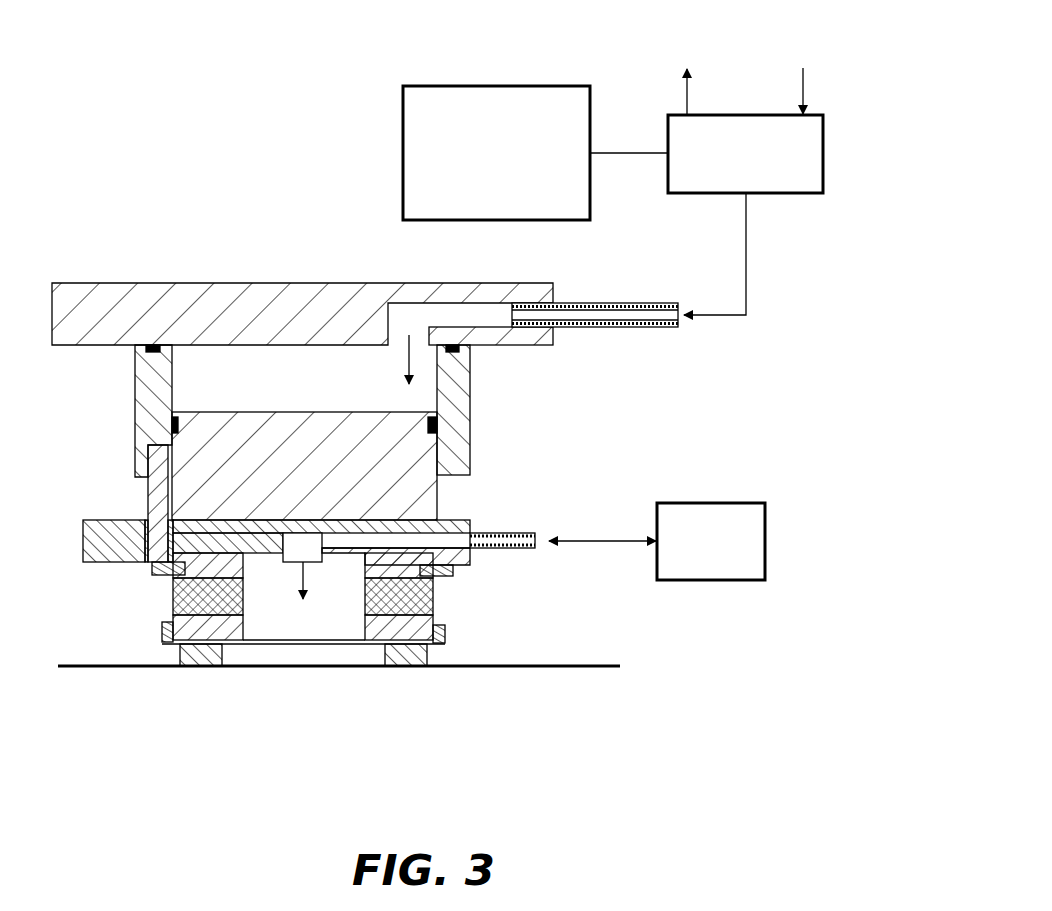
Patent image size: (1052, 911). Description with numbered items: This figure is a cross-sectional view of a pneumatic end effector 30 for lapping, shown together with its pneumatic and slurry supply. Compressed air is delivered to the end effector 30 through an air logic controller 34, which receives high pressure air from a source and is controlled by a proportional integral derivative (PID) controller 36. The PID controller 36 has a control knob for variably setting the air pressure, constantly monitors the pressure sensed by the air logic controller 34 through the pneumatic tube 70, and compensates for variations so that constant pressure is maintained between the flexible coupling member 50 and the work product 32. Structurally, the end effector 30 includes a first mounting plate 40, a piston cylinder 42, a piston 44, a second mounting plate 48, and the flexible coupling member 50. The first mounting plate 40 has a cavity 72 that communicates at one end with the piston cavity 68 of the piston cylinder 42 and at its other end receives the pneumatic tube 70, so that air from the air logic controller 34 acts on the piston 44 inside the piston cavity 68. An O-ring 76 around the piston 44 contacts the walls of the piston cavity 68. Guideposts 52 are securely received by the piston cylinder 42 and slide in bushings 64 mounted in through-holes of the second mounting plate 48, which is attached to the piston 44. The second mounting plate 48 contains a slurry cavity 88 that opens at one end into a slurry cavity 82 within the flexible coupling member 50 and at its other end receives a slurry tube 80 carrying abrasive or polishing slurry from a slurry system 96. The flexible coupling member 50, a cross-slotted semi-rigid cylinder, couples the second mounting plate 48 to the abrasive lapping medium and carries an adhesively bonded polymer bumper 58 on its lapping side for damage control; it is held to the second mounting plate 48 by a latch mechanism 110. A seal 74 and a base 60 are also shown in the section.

The end effector 30 is at (180, 77).
The work product 32 is at (88, 666).
The air logic controller 34 is at (797, 194).
The proportional integral derivative (PID) controller 36 is at (403, 118).
The first mounting plate 40 is at (108, 283).
The piston cylinder 42 is at (135, 390).
The piston 44 is at (437, 500).
The second mounting plate 48 is at (83, 535).
The flexible coupling member 50 is at (465, 565).
The guideposts 52 is at (148, 505).
The polymer bumper 58 is at (447, 633).
The support base 60 is at (405, 666).
The bushings 64 is at (146, 540).
The piston cavity 68 is at (282, 368).
The pneumatic tube 70 is at (627, 303).
The cavity 72 is at (409, 320).
The seal 74 is at (150, 350).
The O-ring 76 is at (172, 423).
The slurry tube 80 is at (505, 542).
The slurry cavity 82 is at (275, 625).
The slurry cavity 88 is at (435, 540).
The slurry system 96 is at (692, 503).
The latch mechanism 110 is at (152, 570).